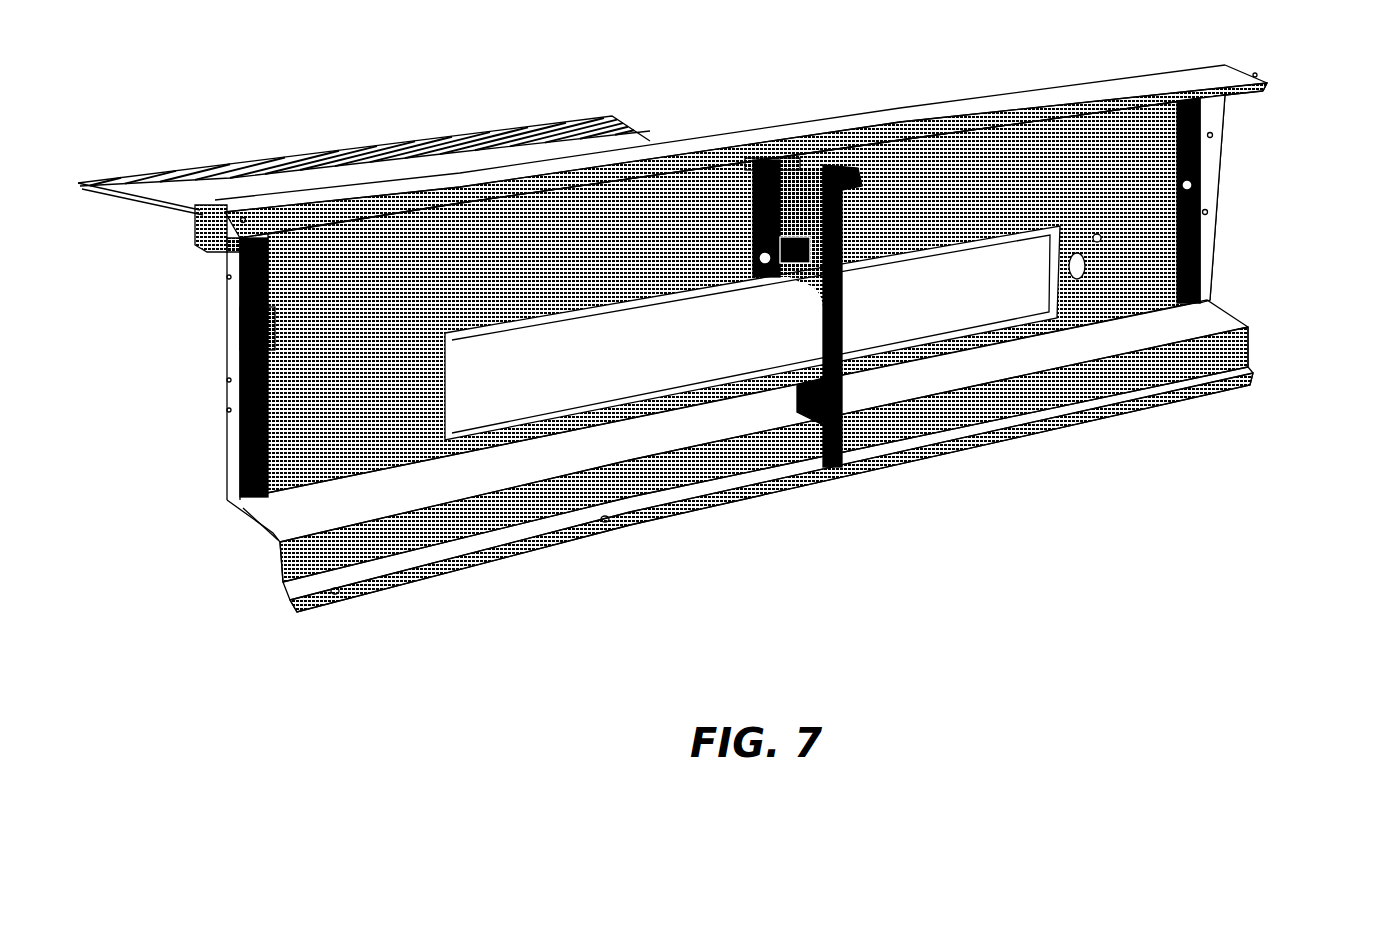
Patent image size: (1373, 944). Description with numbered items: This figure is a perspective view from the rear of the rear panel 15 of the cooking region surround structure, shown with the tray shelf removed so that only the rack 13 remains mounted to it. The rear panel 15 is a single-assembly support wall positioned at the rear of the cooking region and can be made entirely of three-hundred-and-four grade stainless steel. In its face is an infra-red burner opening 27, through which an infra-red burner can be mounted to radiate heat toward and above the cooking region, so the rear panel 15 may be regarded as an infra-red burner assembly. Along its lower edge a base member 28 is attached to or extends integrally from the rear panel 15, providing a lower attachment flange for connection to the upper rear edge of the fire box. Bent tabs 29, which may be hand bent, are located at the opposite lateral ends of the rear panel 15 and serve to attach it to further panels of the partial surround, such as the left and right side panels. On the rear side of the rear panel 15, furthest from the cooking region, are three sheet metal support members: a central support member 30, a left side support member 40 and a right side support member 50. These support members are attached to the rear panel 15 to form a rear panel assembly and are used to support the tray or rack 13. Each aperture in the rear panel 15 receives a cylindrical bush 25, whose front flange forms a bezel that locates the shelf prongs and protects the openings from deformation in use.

The rack 13 is at (253, 158).
The rear panel 15 is at (365, 345).
The cylindrical bush 25 is at (768, 248).
The infra-red burner opening 27 is at (633, 370).
The base member 28 is at (1177, 330).
The bent tabs 29 is at (237, 340).
The central support member 30 is at (833, 397).
The left side support member 40 is at (1202, 220).
The right side support member 50 is at (268, 403).